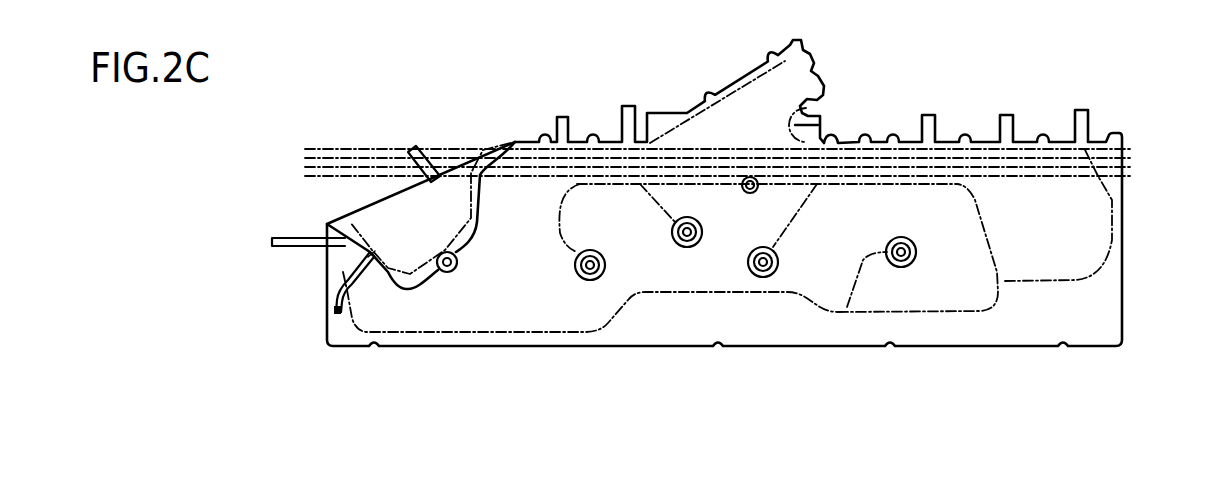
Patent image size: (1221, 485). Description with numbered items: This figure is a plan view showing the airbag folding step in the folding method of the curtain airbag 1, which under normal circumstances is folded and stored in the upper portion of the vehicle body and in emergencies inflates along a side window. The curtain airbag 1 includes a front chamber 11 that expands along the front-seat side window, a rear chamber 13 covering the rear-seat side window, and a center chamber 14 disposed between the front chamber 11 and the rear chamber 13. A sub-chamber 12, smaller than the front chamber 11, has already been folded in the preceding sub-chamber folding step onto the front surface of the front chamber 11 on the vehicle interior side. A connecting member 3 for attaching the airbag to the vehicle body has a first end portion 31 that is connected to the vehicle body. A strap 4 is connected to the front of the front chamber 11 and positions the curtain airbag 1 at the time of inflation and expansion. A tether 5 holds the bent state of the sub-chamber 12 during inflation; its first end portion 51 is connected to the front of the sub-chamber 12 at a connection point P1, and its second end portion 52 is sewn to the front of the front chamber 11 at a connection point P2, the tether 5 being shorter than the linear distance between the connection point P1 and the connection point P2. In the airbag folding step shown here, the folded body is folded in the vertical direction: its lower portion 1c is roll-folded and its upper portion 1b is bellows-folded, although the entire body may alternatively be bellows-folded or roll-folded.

The curtain airbag 1 is at (485, 101).
The upper portion 1b is at (1150, 142).
The lower portion 1c is at (1150, 187).
The connecting member 3 is at (425, 148).
The first end portion 31 is at (413, 150).
The strap 4 is at (293, 237).
The tether 5 is at (336, 268).
The first end portion 51 is at (373, 253).
The second end portion 52 is at (337, 316).
The connection point P1 is at (372, 258).
The connection point P2 is at (333, 310).
The front chamber 11 is at (513, 330).
The sub-chamber 12 is at (452, 222).
The rear chamber 13 is at (1022, 300).
The center chamber 14 is at (747, 307).